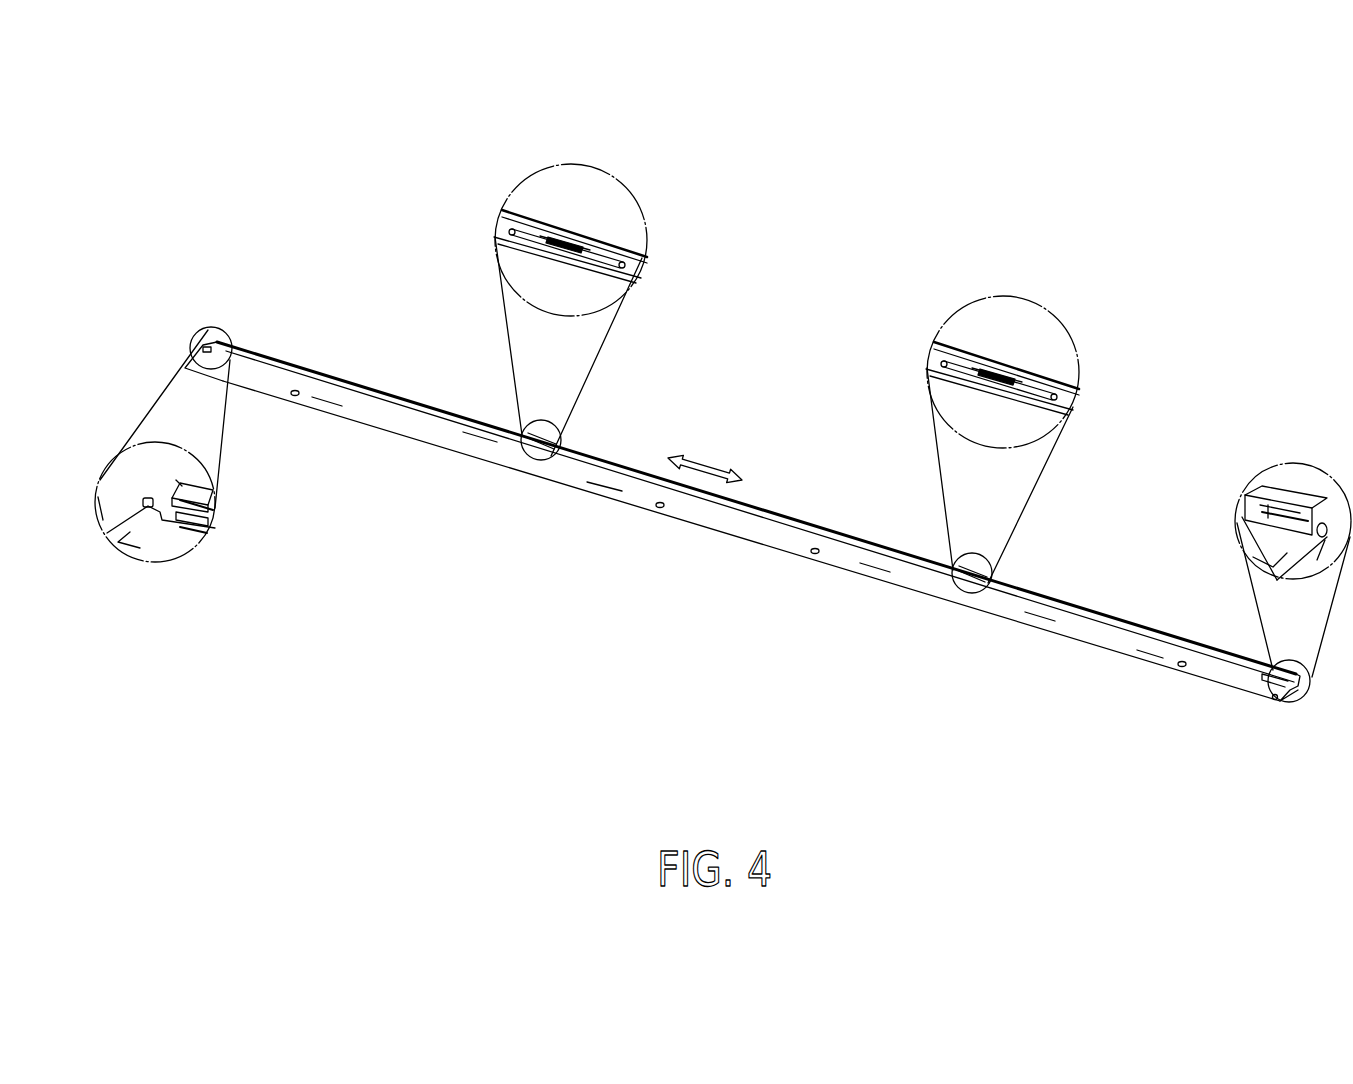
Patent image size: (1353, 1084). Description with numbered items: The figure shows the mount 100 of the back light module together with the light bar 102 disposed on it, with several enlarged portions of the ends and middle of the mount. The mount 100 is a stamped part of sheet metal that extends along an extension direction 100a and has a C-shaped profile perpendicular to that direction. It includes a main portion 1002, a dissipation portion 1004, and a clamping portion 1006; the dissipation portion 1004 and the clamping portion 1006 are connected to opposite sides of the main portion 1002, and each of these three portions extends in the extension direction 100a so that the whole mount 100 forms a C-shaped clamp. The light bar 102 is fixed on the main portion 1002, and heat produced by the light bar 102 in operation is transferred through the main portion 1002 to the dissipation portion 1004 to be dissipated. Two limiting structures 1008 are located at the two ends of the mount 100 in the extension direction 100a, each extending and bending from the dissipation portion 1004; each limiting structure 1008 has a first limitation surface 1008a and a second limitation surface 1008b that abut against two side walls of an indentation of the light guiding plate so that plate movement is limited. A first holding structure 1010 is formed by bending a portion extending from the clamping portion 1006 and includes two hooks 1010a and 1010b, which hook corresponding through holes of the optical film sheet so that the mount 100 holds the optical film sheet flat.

The mount 100 is at (918, 432).
The extension direction 100a is at (712, 458).
The light bar 102 is at (203, 522).
The main portion 1002 is at (605, 252).
The dissipation portion 1004 is at (167, 547).
The clamping portion 1006 is at (630, 272).
The limiting structure 1008 is at (142, 487).
The first limitation surface 1008a is at (98, 497).
The second limitation surface 1008b is at (178, 482).
The first holding structure 1010 is at (545, 435).
The hook 1010a is at (985, 378).
The hook 1010b is at (548, 247).